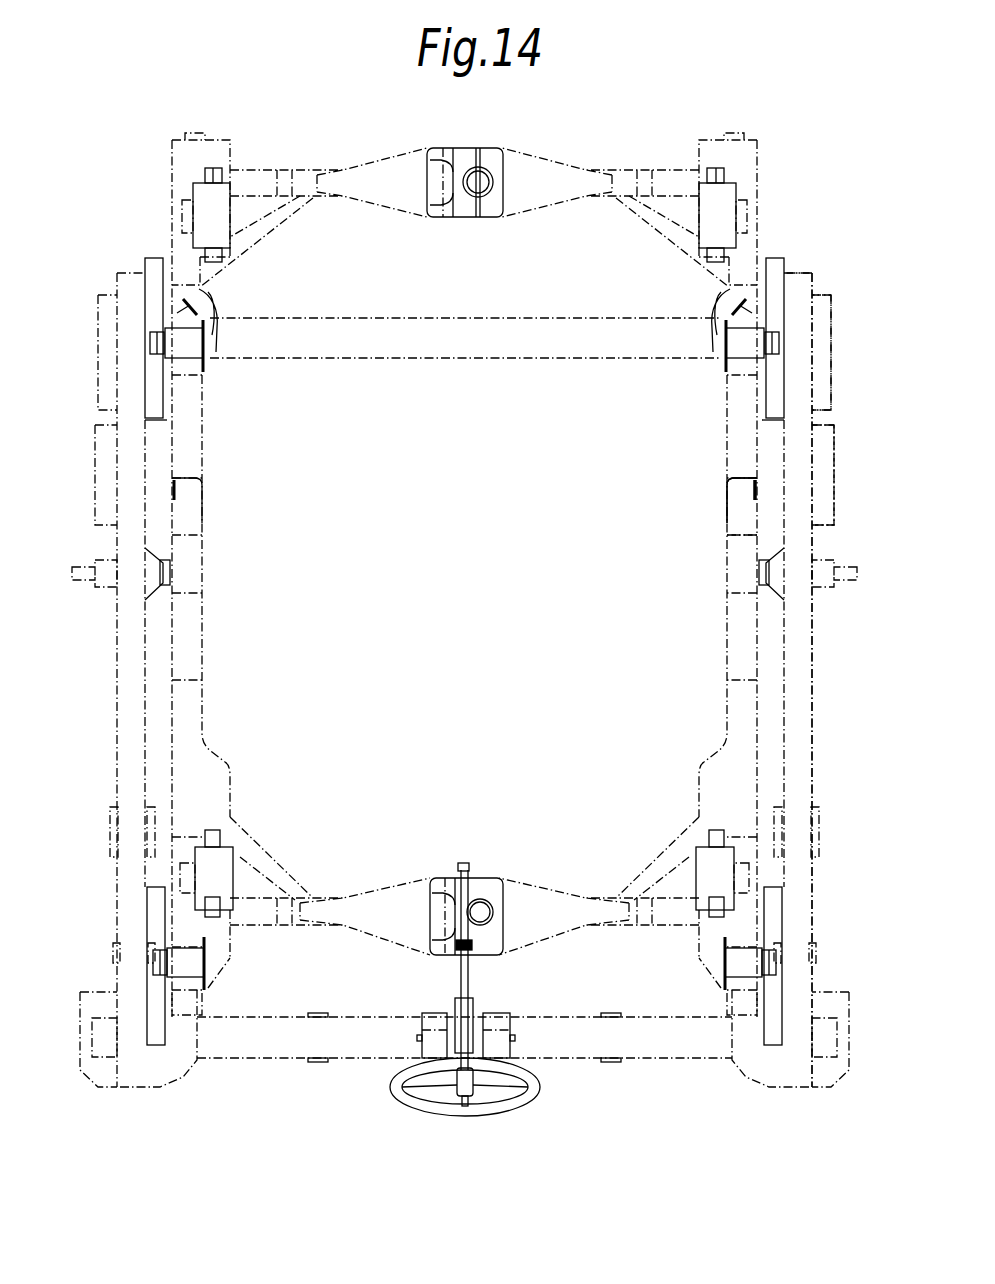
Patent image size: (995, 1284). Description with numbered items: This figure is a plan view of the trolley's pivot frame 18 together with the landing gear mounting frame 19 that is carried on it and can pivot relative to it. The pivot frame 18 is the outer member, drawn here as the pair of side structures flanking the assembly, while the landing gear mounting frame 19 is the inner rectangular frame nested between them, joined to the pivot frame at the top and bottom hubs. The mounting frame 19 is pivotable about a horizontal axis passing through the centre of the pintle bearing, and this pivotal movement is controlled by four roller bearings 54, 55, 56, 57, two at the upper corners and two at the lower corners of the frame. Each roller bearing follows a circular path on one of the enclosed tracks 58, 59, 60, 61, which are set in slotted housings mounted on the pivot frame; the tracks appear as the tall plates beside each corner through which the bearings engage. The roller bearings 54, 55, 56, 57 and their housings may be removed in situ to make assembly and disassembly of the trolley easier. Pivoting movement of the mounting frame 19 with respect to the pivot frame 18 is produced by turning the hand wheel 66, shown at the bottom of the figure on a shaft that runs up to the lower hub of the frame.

The pivot frame 18 is at (810, 333).
The landing gear mounting frame 19 is at (727, 506).
The roller bearing 54 is at (150, 334).
The roller bearing 55 is at (782, 322).
The roller bearing 56 is at (157, 957).
The roller bearing 57 is at (773, 957).
The enclosed track 58 is at (147, 374).
The enclosed track 59 is at (781, 386).
The enclosed track 60 is at (148, 912).
The enclosed track 61 is at (768, 910).
The hand wheel 66 is at (507, 1103).